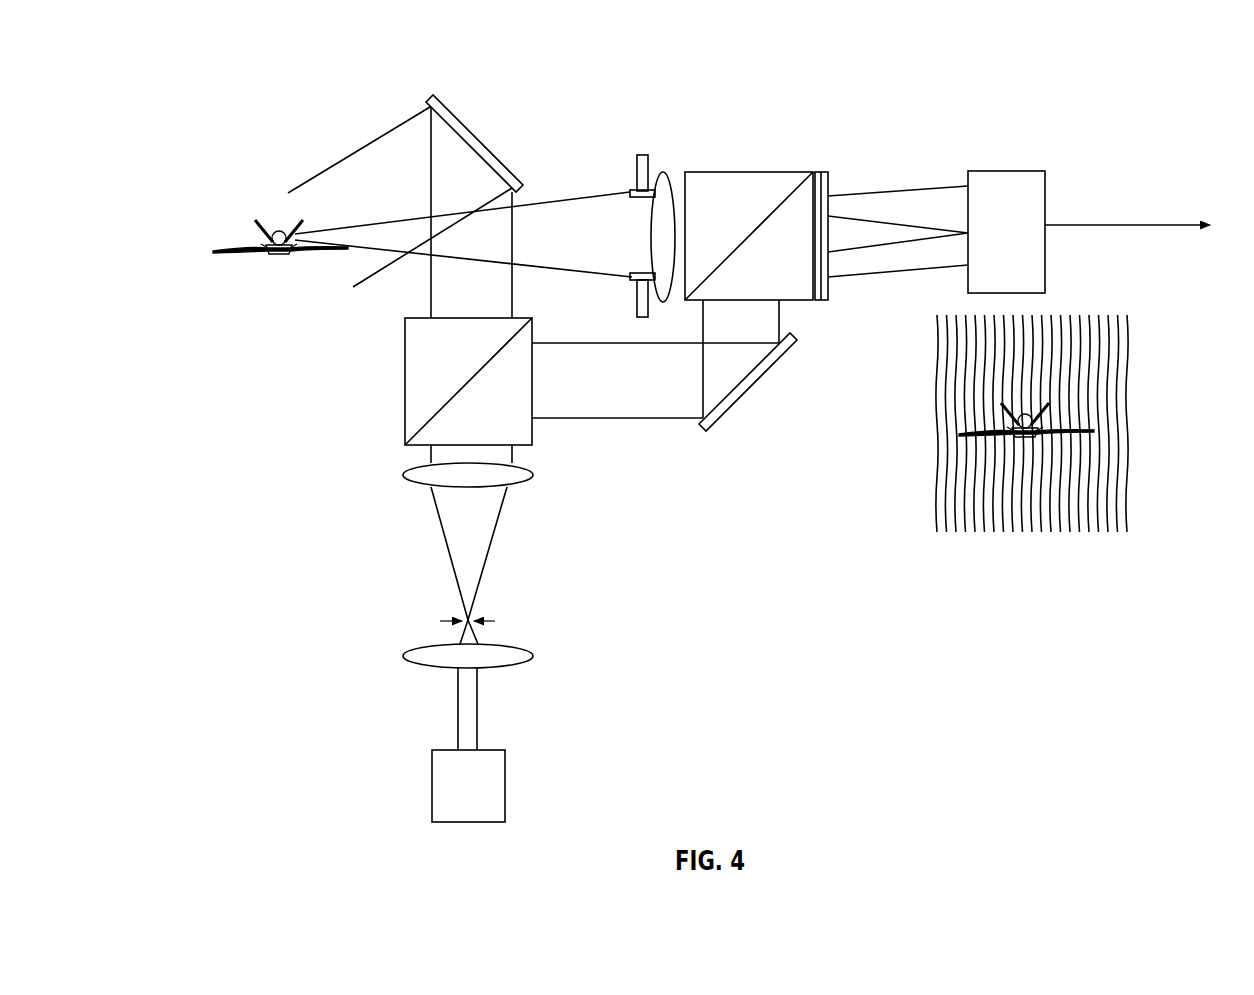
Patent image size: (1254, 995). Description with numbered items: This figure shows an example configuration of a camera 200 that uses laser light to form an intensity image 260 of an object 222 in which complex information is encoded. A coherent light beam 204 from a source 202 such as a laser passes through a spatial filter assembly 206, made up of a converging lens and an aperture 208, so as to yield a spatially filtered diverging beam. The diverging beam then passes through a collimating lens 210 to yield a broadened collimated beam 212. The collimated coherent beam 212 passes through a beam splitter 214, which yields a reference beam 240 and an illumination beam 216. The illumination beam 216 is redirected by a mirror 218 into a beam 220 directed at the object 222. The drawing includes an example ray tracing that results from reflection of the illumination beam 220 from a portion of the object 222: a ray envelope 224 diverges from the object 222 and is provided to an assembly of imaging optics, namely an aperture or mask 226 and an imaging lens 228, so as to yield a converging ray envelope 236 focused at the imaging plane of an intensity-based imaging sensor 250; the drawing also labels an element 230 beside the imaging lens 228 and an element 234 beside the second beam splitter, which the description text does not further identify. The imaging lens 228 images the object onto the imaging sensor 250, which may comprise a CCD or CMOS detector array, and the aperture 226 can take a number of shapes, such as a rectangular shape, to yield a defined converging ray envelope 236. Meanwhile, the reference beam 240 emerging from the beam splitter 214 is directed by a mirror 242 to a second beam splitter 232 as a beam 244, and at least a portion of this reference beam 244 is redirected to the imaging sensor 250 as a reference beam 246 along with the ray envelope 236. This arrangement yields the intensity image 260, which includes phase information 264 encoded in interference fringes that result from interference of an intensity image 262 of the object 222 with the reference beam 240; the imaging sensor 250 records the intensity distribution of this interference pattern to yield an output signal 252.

The camera 200 is at (236, 76).
The source 202 is at (432, 790).
The coherent light beam 204 is at (458, 710).
The spatial filter assembly 206 is at (405, 655).
The aperture 208 is at (455, 618).
The collimating lens 210 is at (405, 476).
The collimated beam 212 is at (508, 454).
The beam splitter 214 is at (405, 385).
The illumination beam 216 is at (435, 283).
The mirror 218 is at (429, 93).
The beam directed at the object 220 is at (348, 175).
The object 222 is at (272, 255).
The ray envelope 224 is at (572, 217).
The aperture or mask 226 is at (628, 297).
The imaging lens 228 is at (654, 157).
The focused object light 230 is at (680, 192).
The beam splitter 232 is at (726, 172).
The polarizer 234 is at (821, 170).
The converging ray envelope 236 is at (858, 233).
The reference beam 240 is at (592, 410).
The mirror 242 is at (742, 398).
The reference beam 244 is at (771, 305).
The reference beam 246 is at (932, 197).
The imaging sensor 250 is at (1028, 171).
The output signal 252 is at (1125, 222).
The intensity image 260 is at (1067, 454).
The intensity image of the object 262 is at (1047, 412).
The phase information 264 is at (1118, 492).